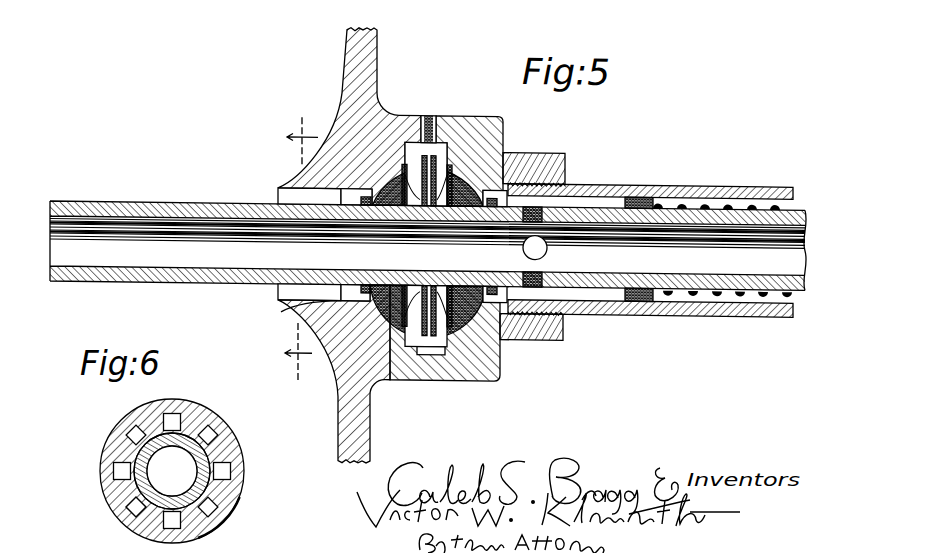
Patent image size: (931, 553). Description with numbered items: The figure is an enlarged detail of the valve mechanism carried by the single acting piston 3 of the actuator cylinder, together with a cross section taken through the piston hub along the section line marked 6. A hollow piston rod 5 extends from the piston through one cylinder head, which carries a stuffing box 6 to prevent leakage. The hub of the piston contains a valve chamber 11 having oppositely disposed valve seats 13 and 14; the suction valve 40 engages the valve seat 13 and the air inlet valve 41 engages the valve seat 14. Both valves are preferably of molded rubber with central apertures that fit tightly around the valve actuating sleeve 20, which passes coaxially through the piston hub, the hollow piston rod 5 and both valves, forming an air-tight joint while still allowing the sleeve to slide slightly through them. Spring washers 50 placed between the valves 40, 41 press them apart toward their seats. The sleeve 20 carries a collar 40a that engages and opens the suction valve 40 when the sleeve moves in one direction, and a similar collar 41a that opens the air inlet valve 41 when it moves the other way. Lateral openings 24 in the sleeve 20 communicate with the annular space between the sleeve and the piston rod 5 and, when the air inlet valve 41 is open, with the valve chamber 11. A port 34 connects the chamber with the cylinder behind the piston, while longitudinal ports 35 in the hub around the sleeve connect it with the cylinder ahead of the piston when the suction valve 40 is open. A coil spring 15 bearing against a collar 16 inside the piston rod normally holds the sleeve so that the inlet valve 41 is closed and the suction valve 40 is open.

In FIG. 5, the single acting piston 3 is at (377, 62).
In FIG. 6, the single acting piston 3 is at (230, 490).
In FIG. 5, the hollow piston rod 5 is at (593, 179).
In FIG. 5, the stuffing box 6 is at (301, 250).
In FIG. 5, the valve chamber 11 is at (472, 178).
In FIG. 5, the valve seat 13 is at (332, 368).
In FIG. 5, the valve seat 14 is at (501, 336).
In FIG. 5, the coil spring 15 is at (710, 195).
In FIG. 5, the collar 16 is at (643, 189).
In FIG. 5, the valve actuating sleeve 20 is at (428, 245).
In FIG. 6, the valve actuating sleeve 20 is at (172, 471).
In FIG. 5, the lateral openings 24 is at (543, 250).
In FIG. 5, the port 34 is at (429, 112).
In FIG. 5, the longitudinal ports 35 is at (278, 289).
In FIG. 6, the longitudinal ports 35 is at (134, 503).
In FIG. 5, the suction valve 40 is at (390, 330).
In FIG. 5, the collar 40a is at (294, 317).
In FIG. 5, the air inlet valve 41 is at (469, 161).
In FIG. 5, the collar 41a is at (500, 181).
In FIG. 5, the spring washers 50 is at (437, 158).